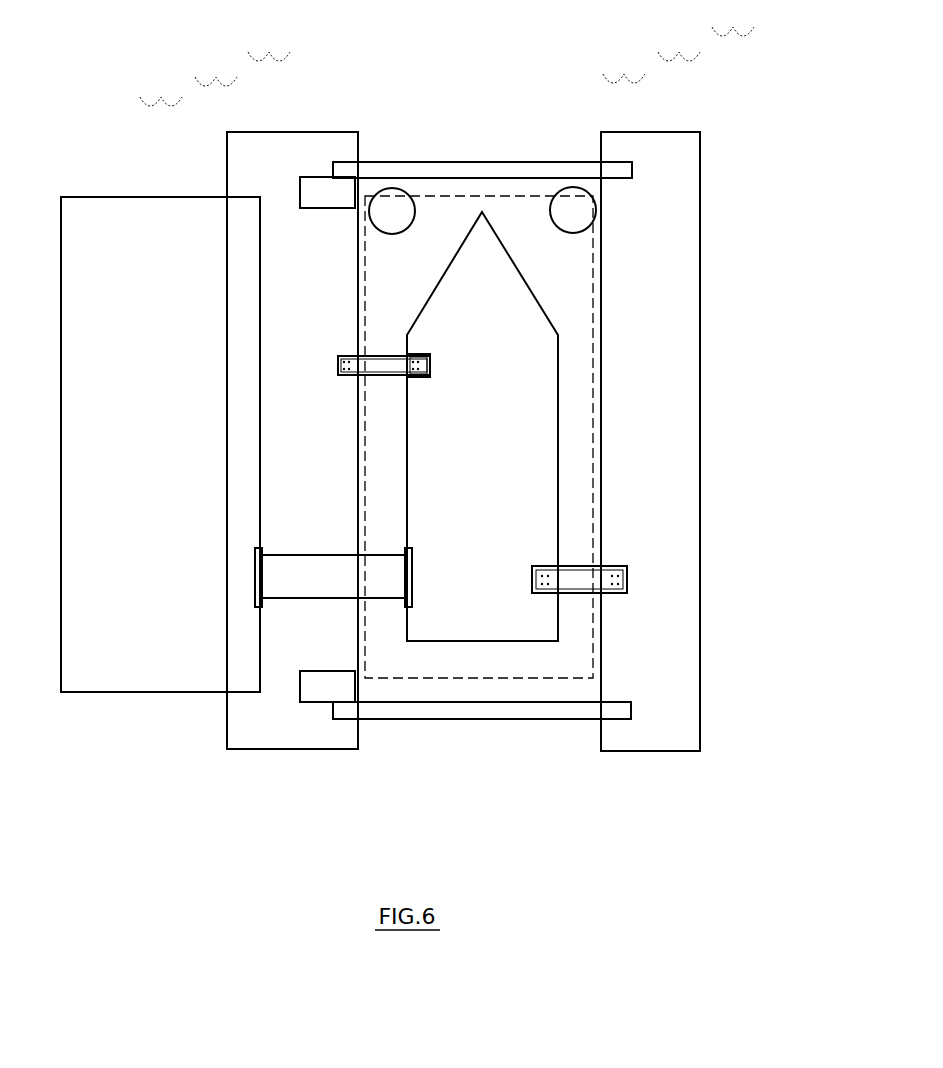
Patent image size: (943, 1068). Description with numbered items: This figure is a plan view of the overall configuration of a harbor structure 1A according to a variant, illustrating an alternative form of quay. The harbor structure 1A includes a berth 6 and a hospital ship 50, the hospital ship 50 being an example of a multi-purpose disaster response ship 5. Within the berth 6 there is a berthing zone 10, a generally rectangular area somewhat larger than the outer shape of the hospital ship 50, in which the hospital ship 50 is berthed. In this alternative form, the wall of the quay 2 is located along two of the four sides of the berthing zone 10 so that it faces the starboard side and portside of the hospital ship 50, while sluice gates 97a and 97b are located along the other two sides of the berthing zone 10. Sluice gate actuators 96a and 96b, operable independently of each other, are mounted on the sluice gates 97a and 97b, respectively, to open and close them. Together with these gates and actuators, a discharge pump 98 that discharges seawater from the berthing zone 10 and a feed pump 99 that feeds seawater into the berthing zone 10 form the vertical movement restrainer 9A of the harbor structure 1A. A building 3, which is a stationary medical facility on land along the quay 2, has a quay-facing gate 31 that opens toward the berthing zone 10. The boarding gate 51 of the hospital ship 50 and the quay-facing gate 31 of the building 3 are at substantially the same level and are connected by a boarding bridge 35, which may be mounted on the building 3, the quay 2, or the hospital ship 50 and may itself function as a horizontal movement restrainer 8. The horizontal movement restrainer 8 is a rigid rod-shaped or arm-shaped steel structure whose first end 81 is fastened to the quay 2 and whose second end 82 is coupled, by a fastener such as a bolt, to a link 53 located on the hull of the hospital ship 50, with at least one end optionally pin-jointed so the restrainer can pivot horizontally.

The harbor structure 1A is at (438, 463).
The quay 2 is at (343, 750).
The building 3 is at (146, 693).
The multi-purpose disaster response ship 5 is at (595, 426).
The hospital ship 50 is at (558, 353).
The berth 6 is at (236, 549).
The horizontal movement restrainer 8 is at (482, 427).
The first end 81 is at (350, 358).
The second end 82 is at (425, 363).
The link 53 is at (425, 380).
The vertical movement restrainer 9A is at (482, 130).
The berthing zone 10 is at (520, 196).
The quay-facing gate 31 is at (252, 590).
The boarding bridge 35 is at (280, 600).
The boarding gate 51 is at (412, 592).
The sluice gate actuator 96a is at (312, 177).
The sluice gate actuator 96b is at (312, 702).
The sluice gate 97a is at (453, 162).
The sluice gate 97b is at (457, 719).
The discharge pump 98 is at (383, 189).
The feed pump 99 is at (568, 187).